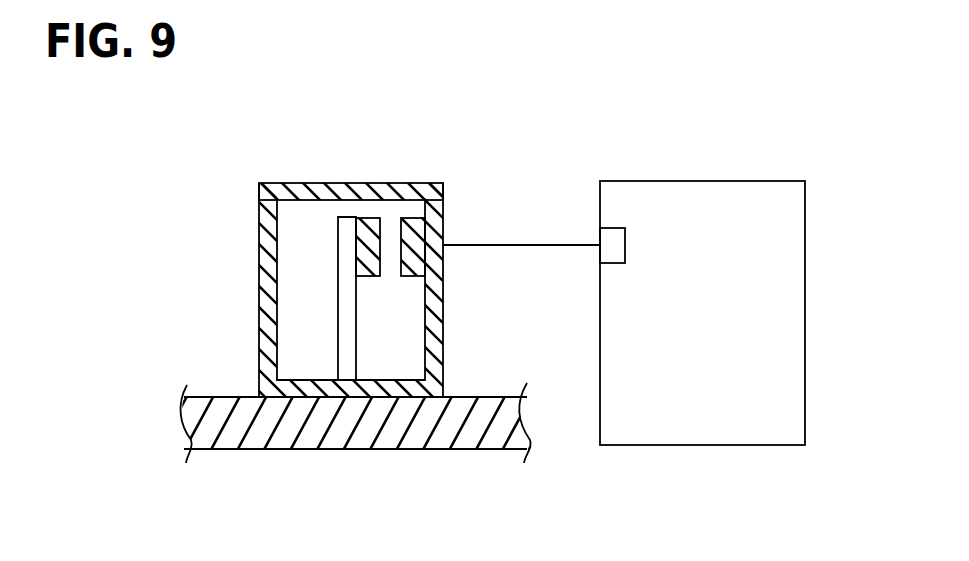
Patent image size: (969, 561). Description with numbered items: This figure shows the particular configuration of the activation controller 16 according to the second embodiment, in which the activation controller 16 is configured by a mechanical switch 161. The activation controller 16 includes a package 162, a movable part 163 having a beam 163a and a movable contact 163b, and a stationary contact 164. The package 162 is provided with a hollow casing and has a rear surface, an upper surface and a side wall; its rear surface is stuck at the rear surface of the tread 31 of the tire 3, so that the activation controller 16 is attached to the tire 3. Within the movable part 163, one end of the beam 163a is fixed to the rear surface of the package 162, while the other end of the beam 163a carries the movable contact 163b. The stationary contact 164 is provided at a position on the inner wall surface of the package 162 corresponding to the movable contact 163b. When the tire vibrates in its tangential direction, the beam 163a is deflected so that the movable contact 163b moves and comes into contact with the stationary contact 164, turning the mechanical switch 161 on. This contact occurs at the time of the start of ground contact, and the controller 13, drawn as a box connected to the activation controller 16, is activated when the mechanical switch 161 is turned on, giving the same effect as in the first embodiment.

The tire 3 is at (372, 458).
The tread 31 is at (283, 440).
The controller 13 is at (770, 181).
The activation controller 16 is at (347, 234).
The mechanical switch 161 is at (251, 253).
The package 162 is at (290, 183).
The movable part 163 is at (347, 234).
The beam 163a is at (344, 223).
The movable contact 163b is at (283, 102).
The stationary contact 164 is at (413, 218).